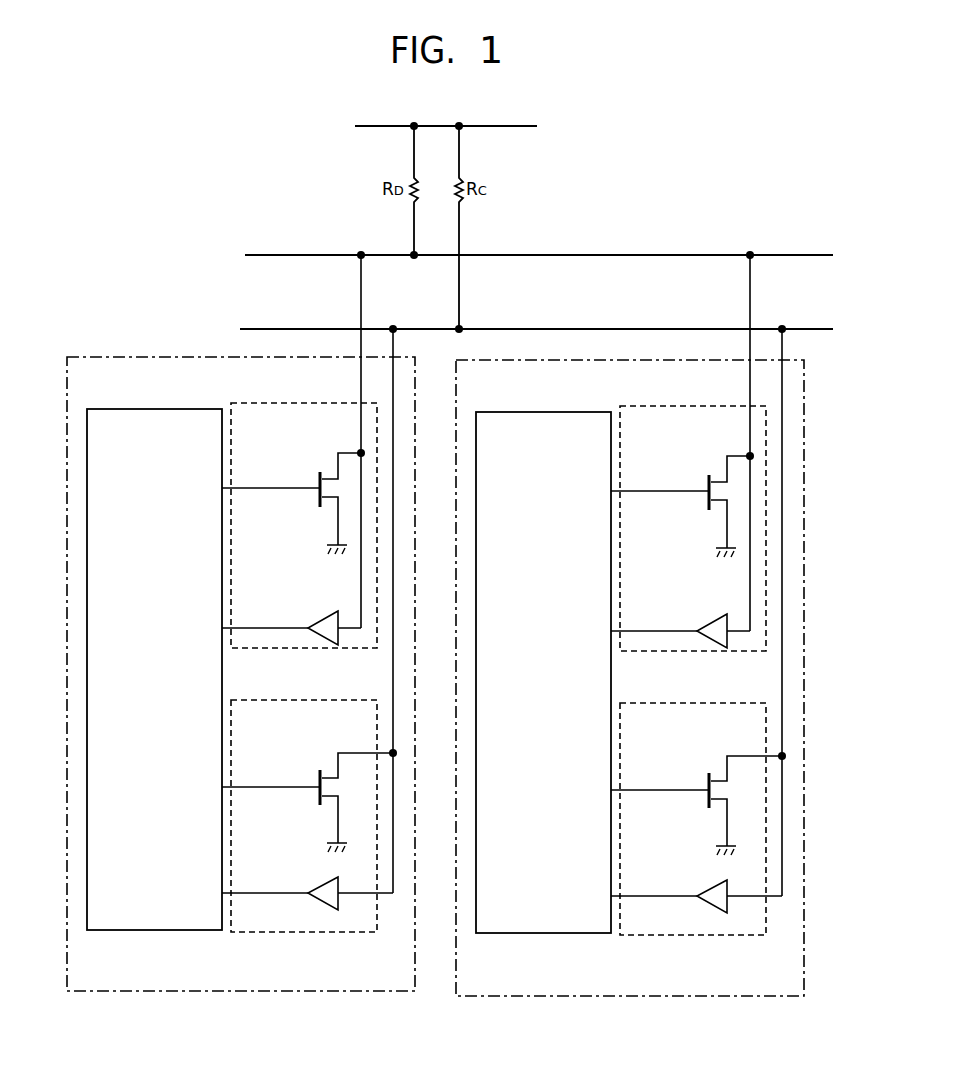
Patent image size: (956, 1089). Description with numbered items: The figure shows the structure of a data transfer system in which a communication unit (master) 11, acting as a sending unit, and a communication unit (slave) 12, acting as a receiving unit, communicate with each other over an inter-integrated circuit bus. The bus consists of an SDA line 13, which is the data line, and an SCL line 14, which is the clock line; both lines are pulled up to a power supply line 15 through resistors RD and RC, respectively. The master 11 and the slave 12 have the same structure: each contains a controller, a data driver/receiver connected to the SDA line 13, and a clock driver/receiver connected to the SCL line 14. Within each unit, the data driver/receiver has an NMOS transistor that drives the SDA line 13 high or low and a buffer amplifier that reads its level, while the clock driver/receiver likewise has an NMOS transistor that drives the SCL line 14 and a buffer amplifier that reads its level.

The communication unit (master) 11 is at (295, 993).
The communication unit (slave) 12 is at (672, 997).
The SDA line 13 is at (541, 254).
The SCL line 14 is at (540, 328).
The power supply line 15 is at (522, 125).